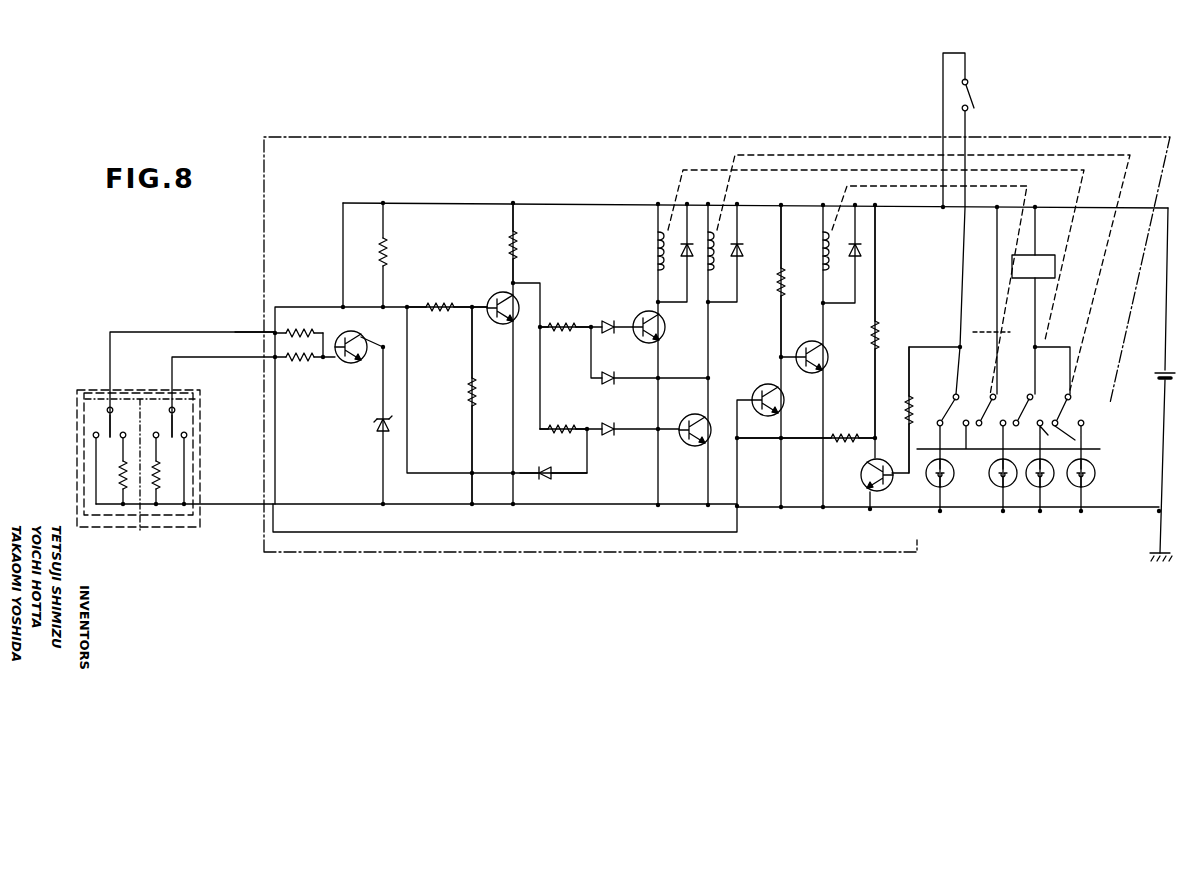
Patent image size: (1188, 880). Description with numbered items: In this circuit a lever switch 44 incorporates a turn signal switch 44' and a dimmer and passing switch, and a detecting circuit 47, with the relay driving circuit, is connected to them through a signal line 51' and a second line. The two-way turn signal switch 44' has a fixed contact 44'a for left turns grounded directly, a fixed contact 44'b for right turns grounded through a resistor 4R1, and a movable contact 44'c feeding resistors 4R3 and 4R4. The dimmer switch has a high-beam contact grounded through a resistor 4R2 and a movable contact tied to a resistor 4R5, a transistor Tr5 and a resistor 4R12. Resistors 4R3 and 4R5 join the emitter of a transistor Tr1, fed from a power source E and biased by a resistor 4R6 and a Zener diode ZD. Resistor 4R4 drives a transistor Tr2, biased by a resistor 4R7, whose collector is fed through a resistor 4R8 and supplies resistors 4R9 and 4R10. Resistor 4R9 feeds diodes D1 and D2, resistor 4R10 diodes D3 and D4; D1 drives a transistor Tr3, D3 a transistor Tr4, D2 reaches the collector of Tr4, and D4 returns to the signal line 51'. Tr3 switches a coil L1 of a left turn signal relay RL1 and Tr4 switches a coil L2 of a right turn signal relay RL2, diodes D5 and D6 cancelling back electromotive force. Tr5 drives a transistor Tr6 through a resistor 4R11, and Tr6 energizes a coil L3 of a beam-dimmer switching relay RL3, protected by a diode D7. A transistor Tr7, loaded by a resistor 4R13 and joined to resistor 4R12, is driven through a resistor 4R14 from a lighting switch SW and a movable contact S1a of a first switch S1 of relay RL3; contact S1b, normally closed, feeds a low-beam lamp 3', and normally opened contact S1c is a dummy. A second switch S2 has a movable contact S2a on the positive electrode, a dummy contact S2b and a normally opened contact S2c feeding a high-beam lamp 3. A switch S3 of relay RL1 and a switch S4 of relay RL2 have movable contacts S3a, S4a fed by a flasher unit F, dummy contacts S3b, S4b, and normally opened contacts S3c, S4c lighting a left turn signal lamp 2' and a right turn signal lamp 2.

The control circuit unit 47 is at (535, 133).
The switch module 44 is at (138, 473).
The switch section 44' is at (70, 463).
The contact 44'a is at (71, 448).
The contact 44'b is at (132, 404).
The contact 44'c is at (76, 414).
The lead wire 51' is at (251, 319).
The resistor 4R1 is at (119, 470).
The resistor 4R2 is at (160, 470).
The resistor 4R3 is at (303, 328).
The resistor 4R4 is at (441, 303).
The resistor 4R5 is at (300, 362).
The resistor 4R6 is at (378, 253).
The resistor 4R7 is at (468, 398).
The resistor 4R8 is at (509, 246).
The resistor 4R9 is at (565, 332).
The resistor 4R10 is at (562, 424).
The resistor 4R11 is at (778, 290).
The resistor 4R12 is at (848, 434).
The resistor 4R13 is at (878, 337).
The resistor 4R14 is at (905, 408).
The transistor Tr1 is at (352, 364).
The transistor Tr2 is at (493, 298).
The transistor Tr3 is at (662, 333).
The transistor Tr4 is at (690, 446).
The transistor Tr5 is at (760, 388).
The transistor Tr6 is at (828, 362).
The transistor Tr7 is at (862, 481).
The zener diode ZD is at (376, 432).
The diode D1 is at (607, 320).
The diode D2 is at (608, 372).
The diode D3 is at (608, 423).
The diode D4 is at (544, 466).
The diode D5 is at (660, 246).
The diode D6 is at (744, 255).
The diode D7 is at (862, 252).
The relay coil L1 is at (656, 262).
The relay coil L2 is at (716, 248).
The relay coil L3 is at (820, 246).
The relay RL1 is at (703, 140).
The relay RL2 is at (818, 140).
The relay RL3 is at (905, 140).
The power switch SW is at (973, 96).
The switch S1 is at (958, 409).
The switch pivot contact S1a is at (954, 393).
The switch contact S1b is at (938, 419).
The switch contact S1c is at (969, 444).
The switch S2 is at (996, 409).
The switch pivot contact S2a is at (991, 393).
The switch contact S2b is at (986, 433).
The switch contact S2c is at (1005, 427).
The switch S3 is at (1032, 409).
The switch pivot contact S3a is at (1028, 393).
The switch contact S3b is at (1016, 419).
The switch contact S3c is at (1054, 433).
The switch S4 is at (1072, 409).
The switch pivot contact S4a is at (1066, 396).
The switch contact S4b is at (1086, 433).
The switch contact S4c is at (1085, 423).
The lamp 3' is at (946, 482).
The lamp 3 is at (997, 482).
The lamp 2 is at (1036, 482).
The lamp 2' is at (1075, 482).
The fuse F is at (1033, 253).
The battery E is at (1160, 380).